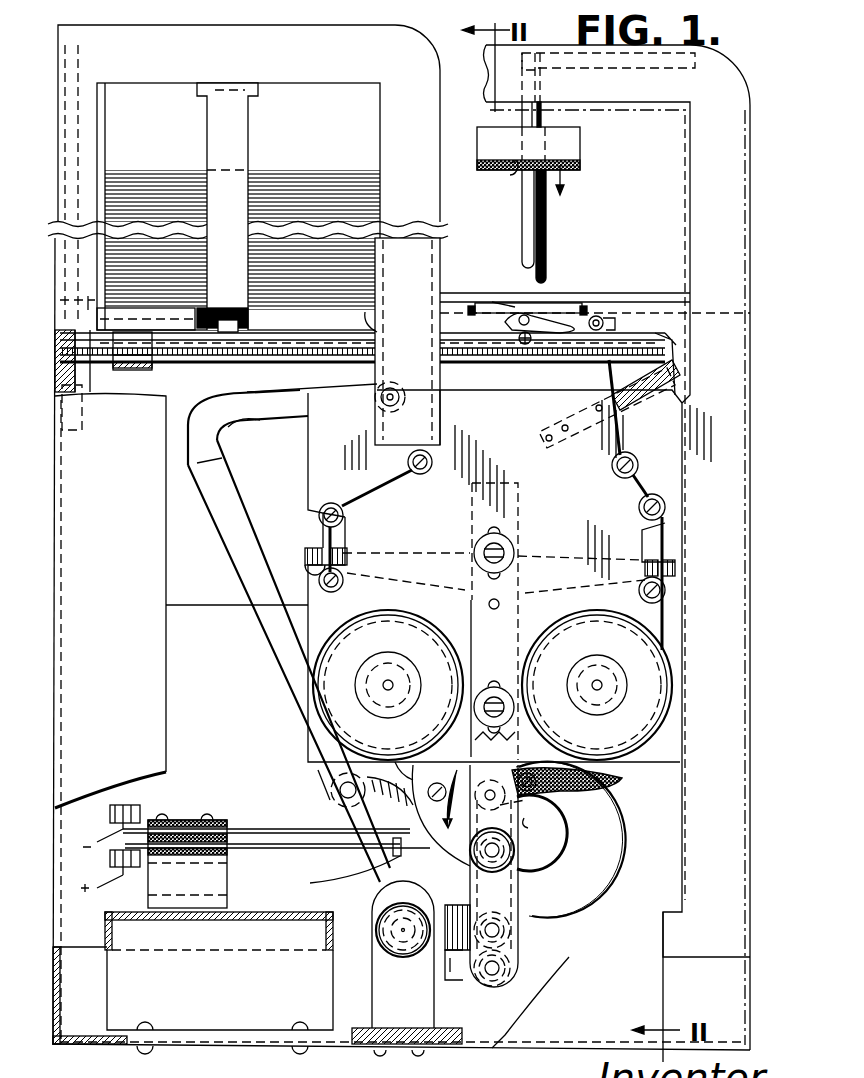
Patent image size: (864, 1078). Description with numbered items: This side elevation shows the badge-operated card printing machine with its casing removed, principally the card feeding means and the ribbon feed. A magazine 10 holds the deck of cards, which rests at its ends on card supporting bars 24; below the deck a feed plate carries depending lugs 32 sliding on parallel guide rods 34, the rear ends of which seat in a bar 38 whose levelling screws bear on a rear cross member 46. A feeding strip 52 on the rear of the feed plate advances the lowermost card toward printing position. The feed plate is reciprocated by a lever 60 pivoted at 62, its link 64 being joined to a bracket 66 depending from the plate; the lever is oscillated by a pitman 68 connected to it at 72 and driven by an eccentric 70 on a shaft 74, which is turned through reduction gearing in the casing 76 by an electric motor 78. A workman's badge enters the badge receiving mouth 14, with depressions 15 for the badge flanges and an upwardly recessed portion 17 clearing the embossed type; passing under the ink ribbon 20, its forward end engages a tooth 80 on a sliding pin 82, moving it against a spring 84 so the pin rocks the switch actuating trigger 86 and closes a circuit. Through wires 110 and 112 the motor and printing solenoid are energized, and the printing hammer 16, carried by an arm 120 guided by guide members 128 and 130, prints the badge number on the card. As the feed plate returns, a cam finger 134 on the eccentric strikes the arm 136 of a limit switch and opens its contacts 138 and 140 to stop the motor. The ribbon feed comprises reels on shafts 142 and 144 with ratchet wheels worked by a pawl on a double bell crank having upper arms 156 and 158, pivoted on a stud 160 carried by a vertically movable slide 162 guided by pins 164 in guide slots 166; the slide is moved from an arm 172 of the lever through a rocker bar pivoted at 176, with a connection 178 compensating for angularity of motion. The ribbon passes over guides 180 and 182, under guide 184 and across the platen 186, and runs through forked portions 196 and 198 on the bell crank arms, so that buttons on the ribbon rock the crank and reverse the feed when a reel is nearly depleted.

The magazine 10 is at (330, 105).
The badge receiving mouth 14 is at (545, 305).
The depressions 15 is at (471, 307).
The printing hammer 16 is at (581, 148).
The upwardly recessed portion 17 is at (505, 304).
The ink ribbon 20 is at (362, 491).
The card supporting bars 24 is at (123, 310).
The depending lugs 32 is at (133, 372).
The guide rods 34 is at (232, 365).
The bar 38 is at (84, 400).
The rear cross member 46 is at (60, 378).
The feeding strip 52 is at (64, 300).
The lever 60 is at (247, 534).
The pivot 62 is at (404, 938).
The link 64 is at (290, 410).
The bracket 66 is at (379, 397).
The pitman 68 is at (403, 769).
The eccentric 70 is at (574, 829).
The pitman connection 72 is at (340, 787).
The shaft 74 is at (546, 821).
The casing 76 is at (613, 851).
The electric motor 78 is at (222, 667).
The tooth 80 is at (527, 315).
The sliding pin 82 is at (522, 326).
The spring 84 is at (525, 345).
The switch actuating trigger 86 is at (674, 345).
The wire 110 is at (118, 879).
The wire 112 is at (102, 826).
The arm 120 is at (523, 225).
The guide member 128 is at (541, 222).
The guide member 130 is at (512, 170).
The cam finger 134 is at (604, 780).
The limit switch arm 136 is at (330, 919).
The limit switch contact 138 is at (334, 879).
The limit switch contact 140 is at (380, 829).
The reel shaft 142 is at (600, 686).
The reel shaft 144 is at (385, 687).
The upper arm of double bell crank 156 is at (586, 572).
The upper arm of double bell crank 158 is at (372, 556).
The stud 160 is at (499, 603).
The slide 162 is at (480, 487).
The guide pins 164 is at (499, 548).
The guide slots 166 is at (487, 531).
The arm 172 is at (506, 933).
The rocker bar pivot 176 is at (458, 986).
The connection 178 is at (507, 853).
The ribbon guide 180 is at (666, 590).
The ribbon guide 182 is at (666, 510).
The ribbon guide 184 is at (612, 467).
The platen 186 is at (672, 482).
The forked portion 196 is at (676, 569).
The forked portion 198 is at (303, 559).